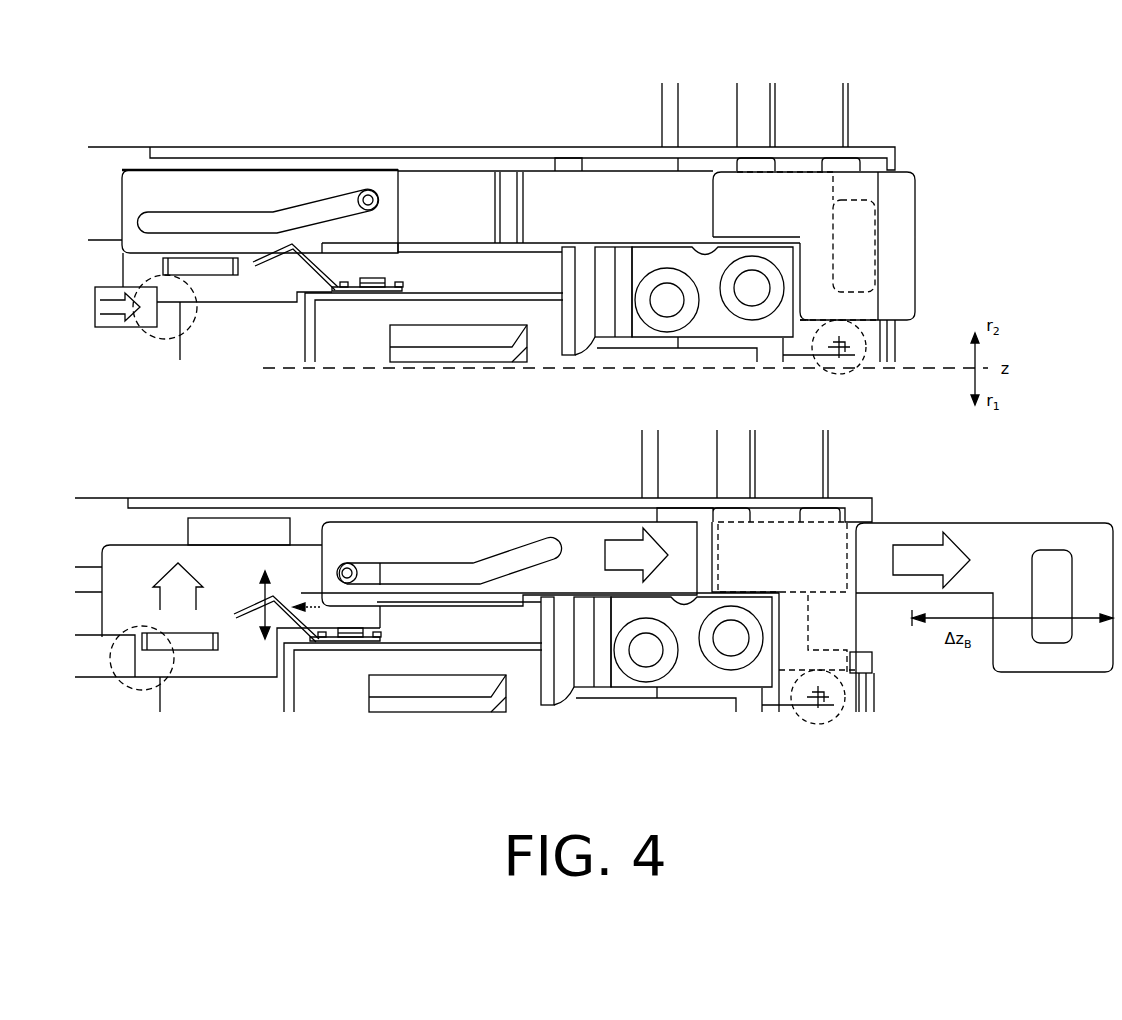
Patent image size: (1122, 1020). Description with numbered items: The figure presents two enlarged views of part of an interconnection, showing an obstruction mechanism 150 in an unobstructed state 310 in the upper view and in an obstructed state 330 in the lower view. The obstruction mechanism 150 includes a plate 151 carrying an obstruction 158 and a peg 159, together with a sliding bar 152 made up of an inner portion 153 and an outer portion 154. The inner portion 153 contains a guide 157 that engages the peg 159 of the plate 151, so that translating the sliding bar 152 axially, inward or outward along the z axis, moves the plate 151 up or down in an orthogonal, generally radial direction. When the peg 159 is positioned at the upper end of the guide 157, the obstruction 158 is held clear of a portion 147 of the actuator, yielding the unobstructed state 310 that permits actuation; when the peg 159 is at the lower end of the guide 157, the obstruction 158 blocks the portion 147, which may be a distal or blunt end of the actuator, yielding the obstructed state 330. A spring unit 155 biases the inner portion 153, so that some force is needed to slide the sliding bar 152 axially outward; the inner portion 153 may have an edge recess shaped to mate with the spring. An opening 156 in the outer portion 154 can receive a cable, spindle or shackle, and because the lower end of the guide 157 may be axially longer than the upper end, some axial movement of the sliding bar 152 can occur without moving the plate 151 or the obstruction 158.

The portion of the actuator 147 is at (160, 340).
The obstruction mechanism 150 is at (430, 128).
The plate 151 is at (250, 294).
The sliding bar 152 is at (576, 216).
The inner portion 153 is at (176, 202).
The outer portion 154 is at (836, 194).
The spring unit 155 is at (391, 287).
The opening 156 is at (876, 279).
The guide 157 is at (238, 212).
The obstruction 158 is at (205, 270).
The peg 159 is at (377, 207).
The unobstructed state 310 is at (467, 102).
The obstructed state 330 is at (496, 449).